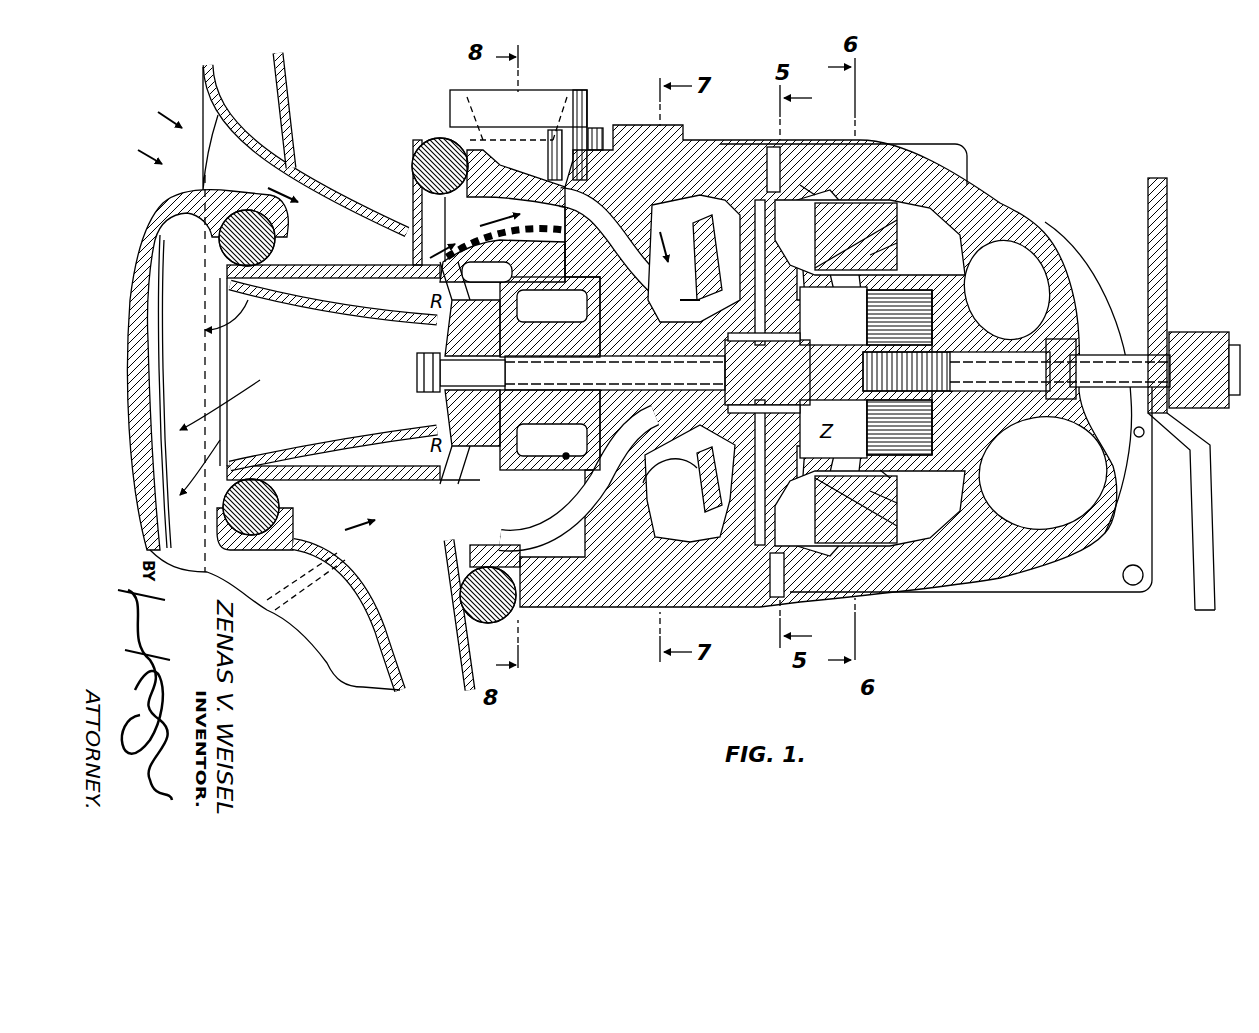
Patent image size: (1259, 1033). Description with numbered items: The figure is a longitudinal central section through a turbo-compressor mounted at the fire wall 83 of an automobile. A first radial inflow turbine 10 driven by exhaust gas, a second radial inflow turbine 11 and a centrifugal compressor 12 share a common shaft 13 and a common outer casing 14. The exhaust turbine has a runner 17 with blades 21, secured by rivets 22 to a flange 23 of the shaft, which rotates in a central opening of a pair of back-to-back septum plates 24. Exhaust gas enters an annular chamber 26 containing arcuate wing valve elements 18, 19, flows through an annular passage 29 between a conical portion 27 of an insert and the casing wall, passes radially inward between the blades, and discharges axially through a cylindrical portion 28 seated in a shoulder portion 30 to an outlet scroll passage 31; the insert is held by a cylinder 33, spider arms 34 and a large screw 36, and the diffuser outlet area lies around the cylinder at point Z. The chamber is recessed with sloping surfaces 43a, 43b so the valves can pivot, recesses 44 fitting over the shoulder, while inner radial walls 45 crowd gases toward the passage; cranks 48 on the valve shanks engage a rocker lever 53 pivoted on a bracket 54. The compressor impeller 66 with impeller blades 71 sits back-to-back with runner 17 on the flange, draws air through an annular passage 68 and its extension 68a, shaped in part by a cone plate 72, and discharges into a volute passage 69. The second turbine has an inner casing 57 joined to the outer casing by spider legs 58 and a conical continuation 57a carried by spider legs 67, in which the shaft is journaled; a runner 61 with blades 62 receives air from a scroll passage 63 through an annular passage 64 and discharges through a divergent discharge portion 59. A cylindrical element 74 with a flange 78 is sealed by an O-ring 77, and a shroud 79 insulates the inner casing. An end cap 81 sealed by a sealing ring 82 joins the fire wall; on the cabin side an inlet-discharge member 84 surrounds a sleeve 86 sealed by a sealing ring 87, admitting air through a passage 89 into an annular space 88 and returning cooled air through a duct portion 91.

The first radial inflow turbine 10 is at (862, 172).
The second radial inflow turbine 11 is at (420, 396).
The centrifugal compressor 12 is at (690, 258).
The common shaft 13 is at (805, 371).
The outer casing 14 is at (615, 127).
The runner 17 is at (820, 306).
The arcuate wing valve element 18 is at (900, 222).
The arcuate wing valve element 19 is at (902, 514).
The blades 21 is at (812, 316).
The rivets 22 is at (728, 360).
The flange 23 is at (700, 432).
The septum plates 24 is at (748, 188).
The chamber 26 is at (870, 373).
The conical portion 27 is at (796, 560).
The cylindrical portion 28 is at (890, 470).
The annular passage 29 is at (786, 168).
The internal shoulder portion 30 is at (934, 443).
The outlet scroll passage 31 is at (1013, 296).
The cylinder 33 is at (848, 385).
The spider arms 34 is at (922, 321).
The screw 36 is at (982, 392).
The sloping surface 43a is at (1006, 290).
The sloping surface 43b is at (1008, 487).
The recesses 44 is at (882, 258).
The inner radial walls 45 is at (812, 182).
The crank 48 is at (1118, 356).
The rocker lever 53 is at (1190, 332).
The bracket 54 is at (1168, 232).
The inner casing 57 is at (548, 562).
The conical continuation of inner casing 57a is at (577, 406).
The spider legs 58 is at (550, 600).
The discharge portion 59 is at (310, 442).
The runner 61 is at (416, 352).
The blades 62 is at (440, 408).
The scroll passage 63 is at (485, 115).
The annular passage 64 is at (455, 495).
The impeller 66 is at (694, 300).
The spider legs 67 is at (605, 515).
The annular passage 68 is at (495, 205).
The extension of annular passage 68a is at (607, 248).
The volute or scroll passage 69 is at (683, 520).
The impeller blades 71 is at (708, 312).
The cone plate 72 is at (700, 490).
The cylindrical element 74 is at (553, 285).
The O-ring 77 is at (566, 454).
The flange 78 is at (512, 320).
The shroud 79 is at (548, 226).
The end cap 81 is at (415, 172).
The sealing ring 82 is at (440, 138).
The fire wall 83 is at (290, 100).
The air inlet-discharge member 84 is at (136, 220).
The sleeve 86 is at (340, 265).
The sealing ring 87 is at (250, 482).
The annular space 88 is at (350, 210).
The passage 89 is at (268, 152).
The duct portion 91 is at (180, 557).